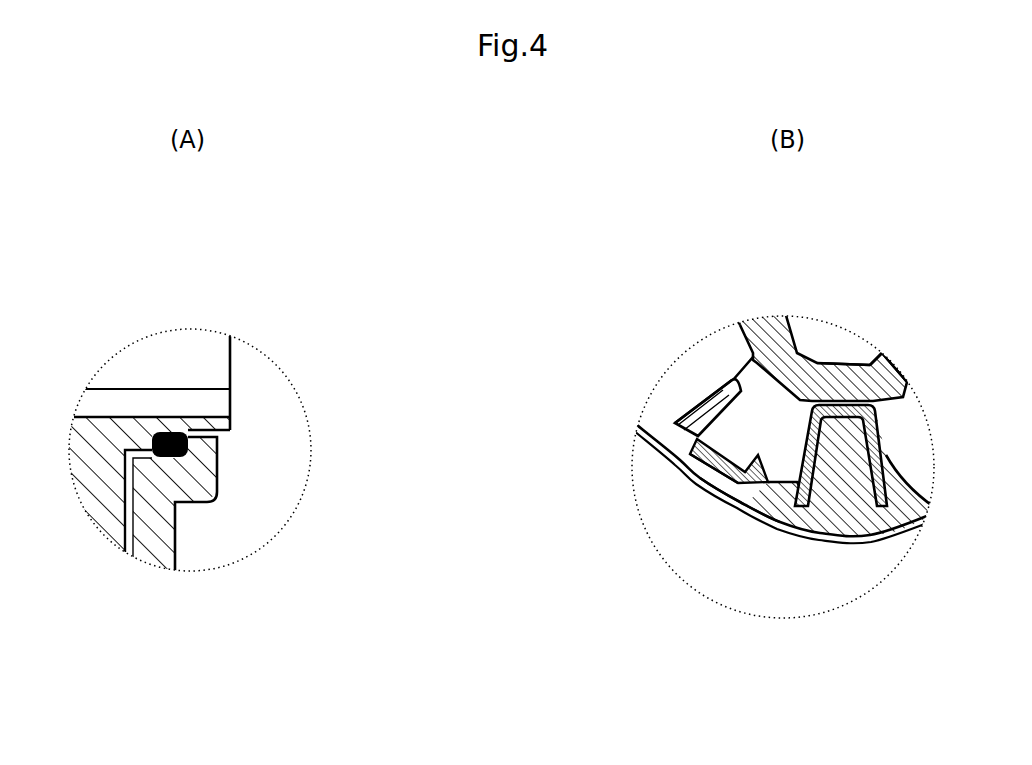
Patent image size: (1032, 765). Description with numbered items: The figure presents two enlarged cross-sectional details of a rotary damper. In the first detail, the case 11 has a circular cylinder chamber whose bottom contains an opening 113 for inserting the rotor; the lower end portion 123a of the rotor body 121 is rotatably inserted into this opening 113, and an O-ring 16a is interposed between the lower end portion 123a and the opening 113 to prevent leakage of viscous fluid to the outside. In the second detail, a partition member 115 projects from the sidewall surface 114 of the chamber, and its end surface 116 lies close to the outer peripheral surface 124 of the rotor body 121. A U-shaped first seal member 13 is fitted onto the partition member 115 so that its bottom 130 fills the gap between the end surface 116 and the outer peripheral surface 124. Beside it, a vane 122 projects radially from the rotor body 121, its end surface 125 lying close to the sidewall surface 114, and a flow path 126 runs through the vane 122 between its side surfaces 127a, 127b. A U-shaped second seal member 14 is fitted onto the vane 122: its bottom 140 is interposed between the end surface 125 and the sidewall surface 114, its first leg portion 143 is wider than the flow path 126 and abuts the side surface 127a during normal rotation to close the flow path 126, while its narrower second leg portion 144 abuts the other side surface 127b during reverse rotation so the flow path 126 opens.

The case 11 is at (176, 548).
The rotor body 121 is at (230, 400).
The lower end portion 123a is at (233, 432).
The opening 113 is at (222, 439).
The O-ring 16a is at (192, 462).
The second seal member 14 is at (714, 472).
The partition member 115 is at (905, 518).
The sidewall surface 114 is at (883, 500).
The vane 122 is at (794, 394).
The outer peripheral surface 124 is at (749, 347).
The bottom 130 is at (823, 388).
The end surface 116 is at (856, 384).
The first seal member 13 is at (879, 438).
The bottom 140 is at (665, 452).
The second leg portion 144 is at (770, 503).
The flow path 126 is at (678, 418).
The side surface 127a is at (699, 405).
The first leg portion 143 is at (716, 395).
The side surface 127b is at (758, 470).
The end surface 125 is at (692, 452).